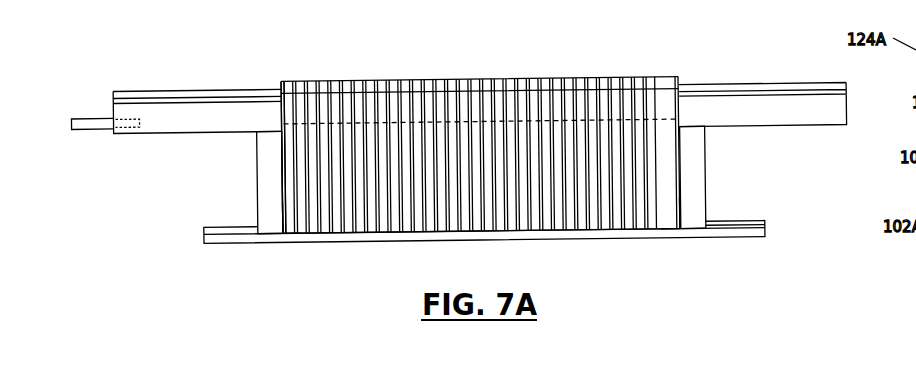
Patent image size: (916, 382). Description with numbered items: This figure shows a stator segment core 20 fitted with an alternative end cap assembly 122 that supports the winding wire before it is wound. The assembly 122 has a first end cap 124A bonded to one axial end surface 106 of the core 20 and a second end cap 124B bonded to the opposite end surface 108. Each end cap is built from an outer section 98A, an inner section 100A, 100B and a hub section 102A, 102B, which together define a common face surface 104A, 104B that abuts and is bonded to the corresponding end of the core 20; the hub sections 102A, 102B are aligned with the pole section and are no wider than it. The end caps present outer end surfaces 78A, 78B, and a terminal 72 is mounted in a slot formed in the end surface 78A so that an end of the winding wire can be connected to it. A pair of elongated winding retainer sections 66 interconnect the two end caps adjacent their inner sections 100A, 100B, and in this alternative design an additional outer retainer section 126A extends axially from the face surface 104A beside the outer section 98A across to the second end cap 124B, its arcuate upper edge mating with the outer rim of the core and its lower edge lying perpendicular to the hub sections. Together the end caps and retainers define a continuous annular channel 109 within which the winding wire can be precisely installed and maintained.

The stator segment core 20 is at (425, 65).
The winding retainer sections 66 is at (473, 242).
The second terminal 72 is at (92, 128).
The end surface of first end cap 78A is at (113, 110).
The end surface of second end cap 78B is at (848, 108).
The outer section 98A is at (163, 127).
The inner section 100A is at (203, 230).
The inner section 100B is at (748, 238).
The hub section 102A is at (257, 167).
The hub section 102B is at (706, 168).
The common face surface 104A is at (283, 208).
The face surface 104B is at (680, 208).
The axial end surface 106 is at (283, 127).
The end surface 108 is at (680, 105).
The continuous annular channel 109 is at (167, 202).
The alternative end cap assembly 122 is at (242, 280).
The first end cap 124A is at (172, 87).
The second end cap 124B is at (753, 82).
The outer retainer section 126A is at (513, 120).